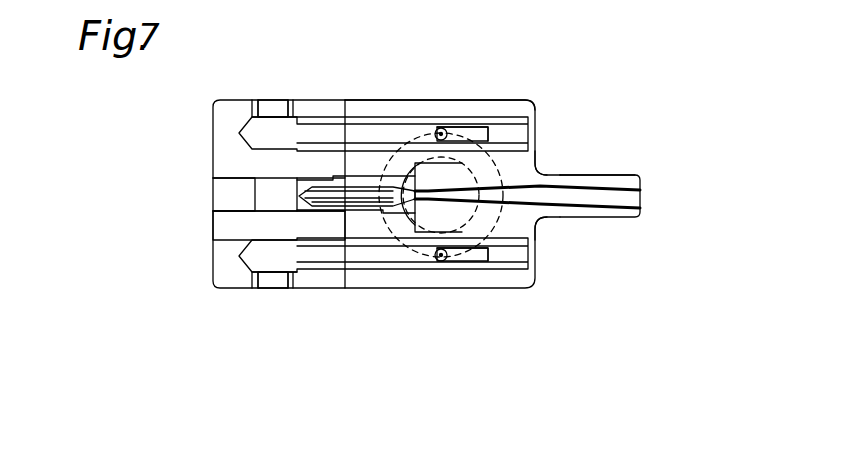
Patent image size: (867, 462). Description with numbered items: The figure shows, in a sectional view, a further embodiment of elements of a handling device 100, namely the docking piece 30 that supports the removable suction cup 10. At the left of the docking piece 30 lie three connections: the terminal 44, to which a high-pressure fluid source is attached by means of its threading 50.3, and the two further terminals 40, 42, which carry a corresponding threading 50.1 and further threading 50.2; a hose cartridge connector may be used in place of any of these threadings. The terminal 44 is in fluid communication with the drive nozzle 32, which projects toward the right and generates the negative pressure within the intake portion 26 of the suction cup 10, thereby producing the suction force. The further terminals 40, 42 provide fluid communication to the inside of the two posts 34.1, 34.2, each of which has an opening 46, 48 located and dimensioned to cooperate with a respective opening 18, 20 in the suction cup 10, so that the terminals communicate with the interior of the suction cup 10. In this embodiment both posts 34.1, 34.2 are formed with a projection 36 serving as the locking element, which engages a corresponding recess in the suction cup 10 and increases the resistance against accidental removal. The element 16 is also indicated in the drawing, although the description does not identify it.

The handling device 100 is at (573, 57).
The suction cup 10 is at (518, 60).
The nozzle / tube 16 is at (632, 197).
The opening 18 is at (441, 261).
The opening 20 is at (444, 130).
The intake portion 26 is at (413, 214).
The docking piece 30 is at (328, 74).
The drive nozzle 32 is at (366, 212).
The post 34.1 is at (538, 260).
The post 34.2 is at (536, 130).
The locking element 36 is at (548, 150).
The further terminal 40 is at (272, 290).
The further terminal 42 is at (268, 100).
The terminal 44 is at (213, 190).
The opening 46 is at (437, 256).
The opening 48 is at (438, 130).
The threading 50.1 is at (255, 290).
The further threading 50.2 is at (250, 98).
The threading 50.3 is at (212, 228).